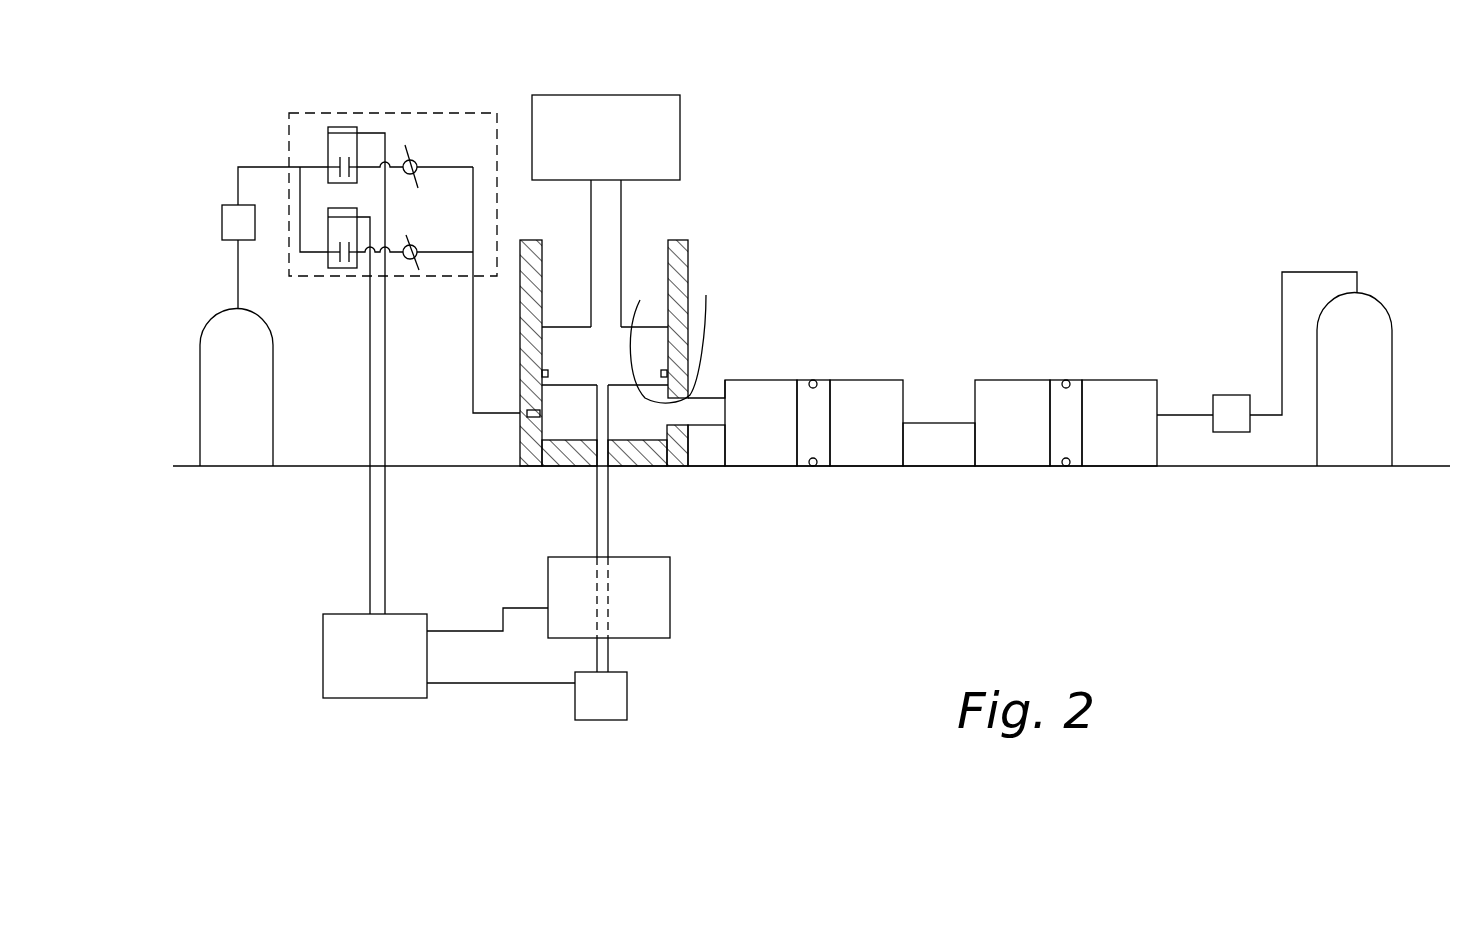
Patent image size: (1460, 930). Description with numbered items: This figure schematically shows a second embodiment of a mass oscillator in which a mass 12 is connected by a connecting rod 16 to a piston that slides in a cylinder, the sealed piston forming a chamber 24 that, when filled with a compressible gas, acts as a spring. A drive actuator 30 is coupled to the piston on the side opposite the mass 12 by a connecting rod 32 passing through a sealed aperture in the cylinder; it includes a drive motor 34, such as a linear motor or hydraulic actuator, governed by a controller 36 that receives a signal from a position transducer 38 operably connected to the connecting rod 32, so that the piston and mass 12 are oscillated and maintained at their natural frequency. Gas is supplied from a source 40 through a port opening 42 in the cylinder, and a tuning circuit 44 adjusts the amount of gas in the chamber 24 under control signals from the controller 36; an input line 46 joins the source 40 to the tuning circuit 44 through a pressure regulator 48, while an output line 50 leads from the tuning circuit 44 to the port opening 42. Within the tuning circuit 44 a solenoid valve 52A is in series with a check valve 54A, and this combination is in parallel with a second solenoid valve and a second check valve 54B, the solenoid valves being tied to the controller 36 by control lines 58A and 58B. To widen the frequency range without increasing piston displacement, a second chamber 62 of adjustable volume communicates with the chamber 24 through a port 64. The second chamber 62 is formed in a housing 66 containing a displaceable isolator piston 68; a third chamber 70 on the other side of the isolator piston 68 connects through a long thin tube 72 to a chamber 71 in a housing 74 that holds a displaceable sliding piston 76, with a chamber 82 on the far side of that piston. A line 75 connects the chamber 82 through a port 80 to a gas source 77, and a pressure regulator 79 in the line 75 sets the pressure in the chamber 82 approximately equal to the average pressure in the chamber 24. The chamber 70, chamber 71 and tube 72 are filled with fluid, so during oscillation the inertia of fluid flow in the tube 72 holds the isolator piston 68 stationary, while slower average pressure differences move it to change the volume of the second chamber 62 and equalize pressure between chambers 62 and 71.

The mass 12 is at (682, 115).
The connecting rod 16 is at (622, 212).
The chamber 24 is at (640, 300).
The drive actuator 30 is at (690, 600).
The connecting rod 32 is at (610, 498).
The drive motor 34 is at (672, 568).
The controller 36 is at (395, 613).
The position transducer 38 is at (627, 682).
The source 40 is at (200, 360).
The port opening 42 is at (520, 417).
The tuning circuit 44 is at (314, 113).
The input line 46 is at (250, 165).
The pressure regulator 48 is at (222, 215).
The output line 50 is at (472, 370).
The solenoid valve 52A is at (336, 127).
The check valve 54A is at (407, 147).
The second check valve 54B is at (403, 277).
The control line 58A is at (385, 522).
The control line 58B is at (367, 503).
The second chamber 62 is at (730, 380).
The port 64 is at (716, 283).
The housing 66 is at (903, 383).
The isolator piston 68 is at (827, 380).
The third chamber 70 is at (850, 380).
The chamber 71 is at (1027, 380).
The long thin tube 72 is at (907, 423).
The housing 74 is at (997, 380).
The line 75 is at (1178, 417).
The sliding piston 76 is at (1067, 380).
The gas source 77 is at (1373, 293).
The pressure regulator 79 is at (1223, 395).
The port 80 is at (1160, 423).
The chamber 82 is at (1103, 380).